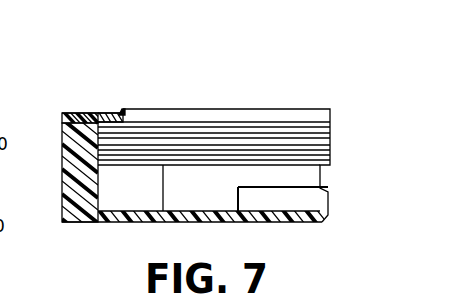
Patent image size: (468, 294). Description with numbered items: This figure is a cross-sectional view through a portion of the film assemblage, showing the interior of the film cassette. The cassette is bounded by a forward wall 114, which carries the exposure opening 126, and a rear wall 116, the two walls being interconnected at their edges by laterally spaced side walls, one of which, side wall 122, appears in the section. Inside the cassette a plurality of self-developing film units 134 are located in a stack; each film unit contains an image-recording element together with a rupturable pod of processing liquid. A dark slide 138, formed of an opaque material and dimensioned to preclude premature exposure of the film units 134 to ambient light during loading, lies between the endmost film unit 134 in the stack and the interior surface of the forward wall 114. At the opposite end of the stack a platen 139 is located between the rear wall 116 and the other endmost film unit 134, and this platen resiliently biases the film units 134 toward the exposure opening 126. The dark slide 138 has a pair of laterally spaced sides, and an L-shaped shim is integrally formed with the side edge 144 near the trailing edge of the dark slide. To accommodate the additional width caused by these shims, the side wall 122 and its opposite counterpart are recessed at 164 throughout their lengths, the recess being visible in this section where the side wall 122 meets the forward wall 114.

The forward wall 114 is at (67, 119).
The rear wall 116 is at (148, 223).
The side wall 122 is at (62, 164).
The exposure opening 126 is at (300, 104).
The film units 134 is at (236, 144).
The dark slide 138 is at (175, 122).
The platen 139 is at (228, 167).
The side edge 144 is at (97, 118).
The recess 164 is at (62, 127).